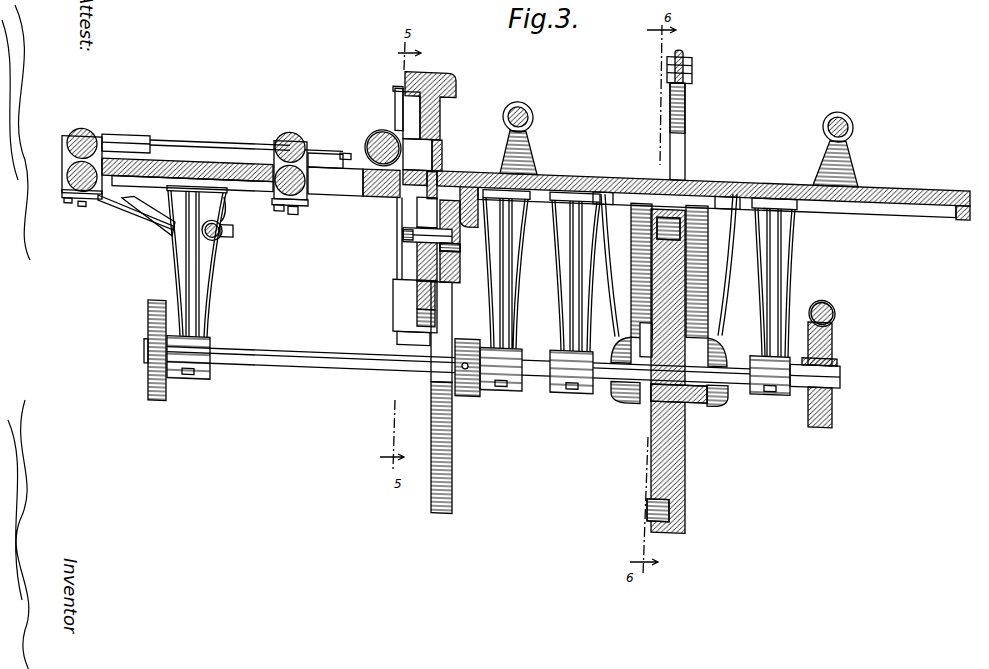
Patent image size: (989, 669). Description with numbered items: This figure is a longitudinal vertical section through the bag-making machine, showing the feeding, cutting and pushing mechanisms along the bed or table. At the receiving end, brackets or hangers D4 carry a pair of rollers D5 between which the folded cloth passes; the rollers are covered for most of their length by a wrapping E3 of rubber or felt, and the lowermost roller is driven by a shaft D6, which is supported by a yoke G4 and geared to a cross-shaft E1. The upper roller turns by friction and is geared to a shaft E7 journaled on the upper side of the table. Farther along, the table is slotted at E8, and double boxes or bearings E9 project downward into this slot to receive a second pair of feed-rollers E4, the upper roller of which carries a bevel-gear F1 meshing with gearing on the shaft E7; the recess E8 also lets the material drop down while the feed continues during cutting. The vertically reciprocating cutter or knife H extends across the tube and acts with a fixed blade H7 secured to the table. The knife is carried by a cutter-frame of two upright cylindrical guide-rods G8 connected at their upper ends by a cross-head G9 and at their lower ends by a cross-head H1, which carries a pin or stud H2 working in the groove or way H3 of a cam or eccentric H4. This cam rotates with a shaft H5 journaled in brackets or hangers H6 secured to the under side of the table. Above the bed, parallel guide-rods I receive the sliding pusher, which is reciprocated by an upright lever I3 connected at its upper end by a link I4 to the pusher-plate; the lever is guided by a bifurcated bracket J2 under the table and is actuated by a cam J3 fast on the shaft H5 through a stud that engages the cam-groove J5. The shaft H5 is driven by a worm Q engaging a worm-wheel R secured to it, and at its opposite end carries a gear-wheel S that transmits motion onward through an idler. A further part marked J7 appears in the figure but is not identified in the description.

The brackets or hangers D4 is at (62, 167).
The pair of rollers D5 is at (86, 148).
The shaft D6 is at (102, 218).
The cross-shaft E1 is at (222, 240).
The wrapping E3 is at (93, 151).
The second pair of feed-rollers E4 is at (305, 154).
The shaft E7 is at (220, 136).
The slot or recess E8 is at (269, 178).
The double boxes or bearings E9 is at (290, 187).
The yoke G4 is at (140, 236).
The upright guide-rods G8 is at (405, 252).
The cross-head G9 is at (455, 77).
The cutter or knife H is at (425, 128).
The cross-head H1 is at (437, 288).
The pin or stud H2 is at (403, 235).
The groove or way H3 is at (460, 244).
The cam or eccentric H4 is at (452, 419).
The shaft H5 is at (847, 365).
The brackets or hangers H6 is at (199, 322).
The fixed blade H7 is at (432, 170).
The guide-rods I is at (533, 113).
The upright lever I3 is at (686, 132).
The link I4 is at (692, 63).
The bevel-gear F1 is at (703, 199).
The bifurcated bracket J2 is at (669, 312).
The cam J3 is at (677, 431).
The cam-groove J5 is at (648, 507).
The yoke lever J7 is at (650, 229).
The worm Q is at (824, 295).
The worm-wheel R is at (833, 335).
The gear-wheel S is at (158, 360).